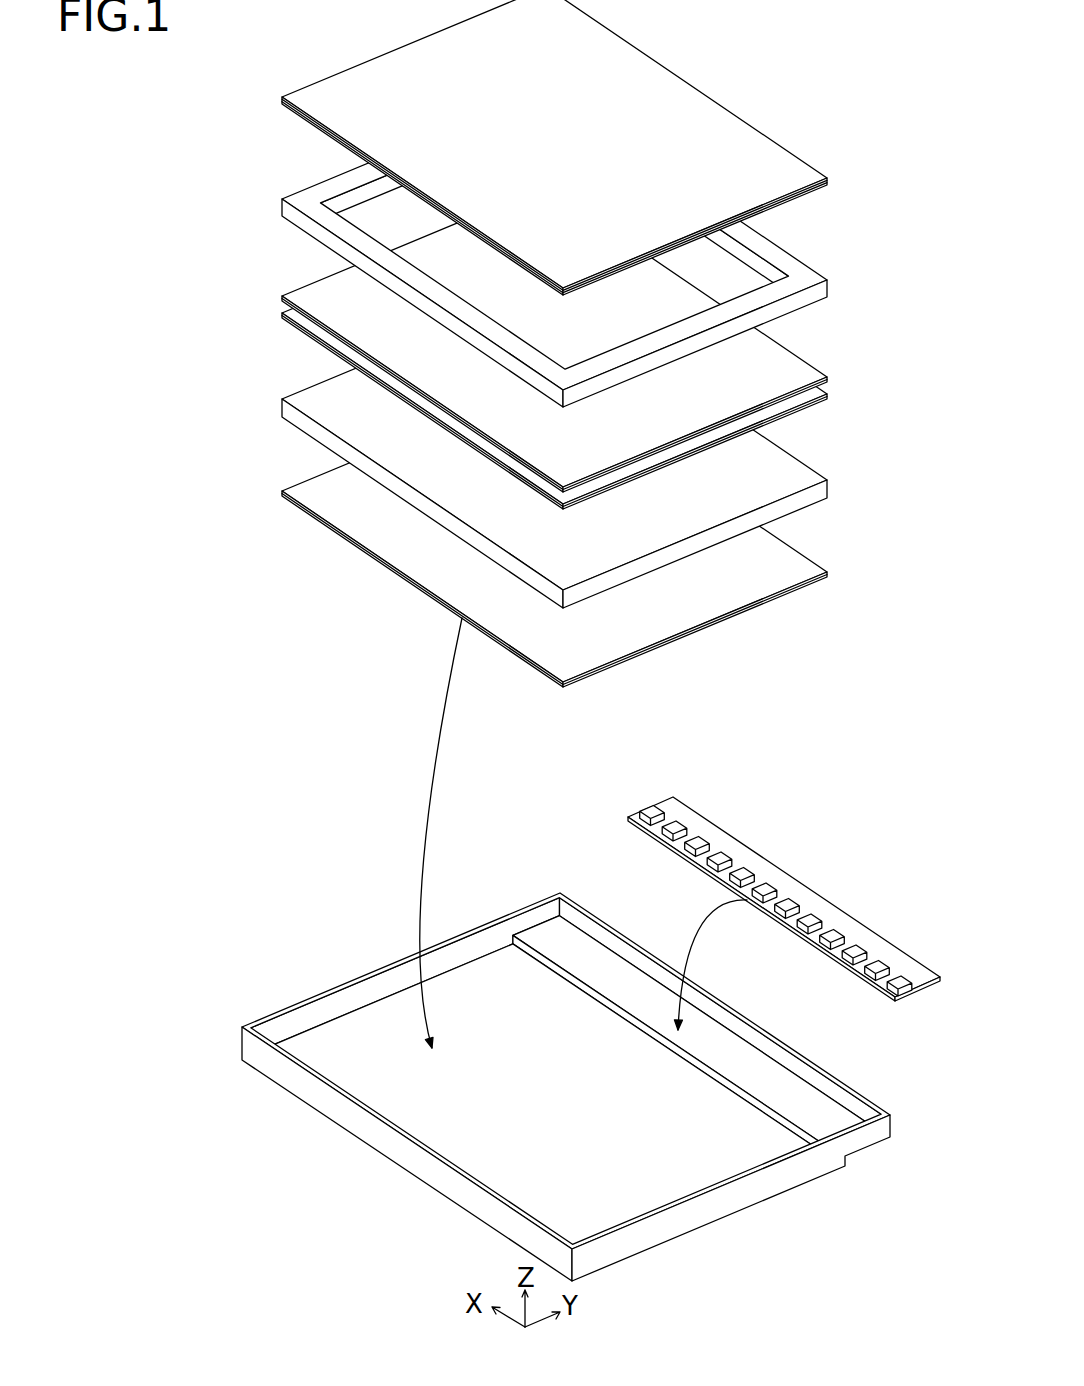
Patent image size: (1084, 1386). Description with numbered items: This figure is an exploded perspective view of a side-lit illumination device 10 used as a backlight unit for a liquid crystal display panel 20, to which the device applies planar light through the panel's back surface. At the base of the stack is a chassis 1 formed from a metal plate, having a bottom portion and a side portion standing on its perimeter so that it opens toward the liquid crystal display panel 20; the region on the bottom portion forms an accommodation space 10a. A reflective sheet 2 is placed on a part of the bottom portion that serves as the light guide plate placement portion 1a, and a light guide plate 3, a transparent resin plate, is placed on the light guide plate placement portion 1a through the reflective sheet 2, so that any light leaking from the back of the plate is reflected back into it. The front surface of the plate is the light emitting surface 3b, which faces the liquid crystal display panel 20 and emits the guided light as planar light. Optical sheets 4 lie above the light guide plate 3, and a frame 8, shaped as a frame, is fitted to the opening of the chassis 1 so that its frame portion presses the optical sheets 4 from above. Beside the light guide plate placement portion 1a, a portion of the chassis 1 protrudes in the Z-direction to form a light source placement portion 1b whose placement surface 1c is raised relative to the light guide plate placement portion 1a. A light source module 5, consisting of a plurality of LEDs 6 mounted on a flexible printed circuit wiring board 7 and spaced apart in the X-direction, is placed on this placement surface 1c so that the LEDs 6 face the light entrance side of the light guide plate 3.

The liquid crystal display panel 20 is at (302, 75).
The illumination device 10 is at (236, 178).
The accommodation space 10a is at (478, 1107).
The frame 8 is at (828, 288).
The optical sheets 4 is at (827, 378).
The light guide plate 3 is at (591, 448).
The light emitting surface 3b is at (788, 480).
The reflective sheet 2 is at (812, 580).
The chassis 1 is at (597, 1089).
The light guide plate placement portion 1a is at (698, 1157).
The light source placement portion 1b is at (732, 1082).
The placement surface 1c is at (803, 1112).
The light source module 5 is at (783, 872).
The LEDs 6 is at (650, 805).
The flexible printed circuit wiring board 7 is at (707, 830).